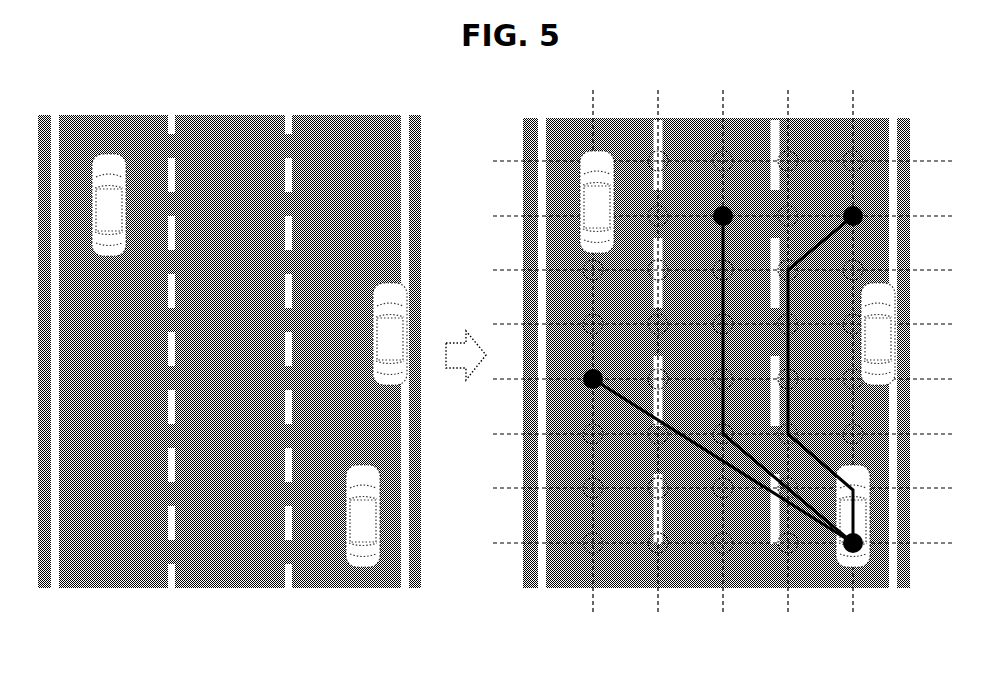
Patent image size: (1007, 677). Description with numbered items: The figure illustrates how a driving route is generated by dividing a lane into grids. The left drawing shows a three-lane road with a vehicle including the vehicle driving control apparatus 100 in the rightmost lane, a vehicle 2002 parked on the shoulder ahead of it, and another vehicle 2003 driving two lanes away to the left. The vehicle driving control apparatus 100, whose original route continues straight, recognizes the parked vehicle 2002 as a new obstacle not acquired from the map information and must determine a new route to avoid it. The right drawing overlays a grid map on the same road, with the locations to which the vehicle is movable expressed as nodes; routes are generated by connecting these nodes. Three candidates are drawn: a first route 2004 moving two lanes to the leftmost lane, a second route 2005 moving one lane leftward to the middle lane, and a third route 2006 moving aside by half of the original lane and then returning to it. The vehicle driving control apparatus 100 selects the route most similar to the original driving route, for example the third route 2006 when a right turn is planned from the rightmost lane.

The vehicle driving control apparatus 100 is at (353, 558).
The parked vehicle 2002 is at (382, 372).
The another vehicle 2003 is at (90, 243).
The first route 2004 is at (580, 380).
The second route 2005 is at (724, 201).
The third route 2006 is at (852, 201).